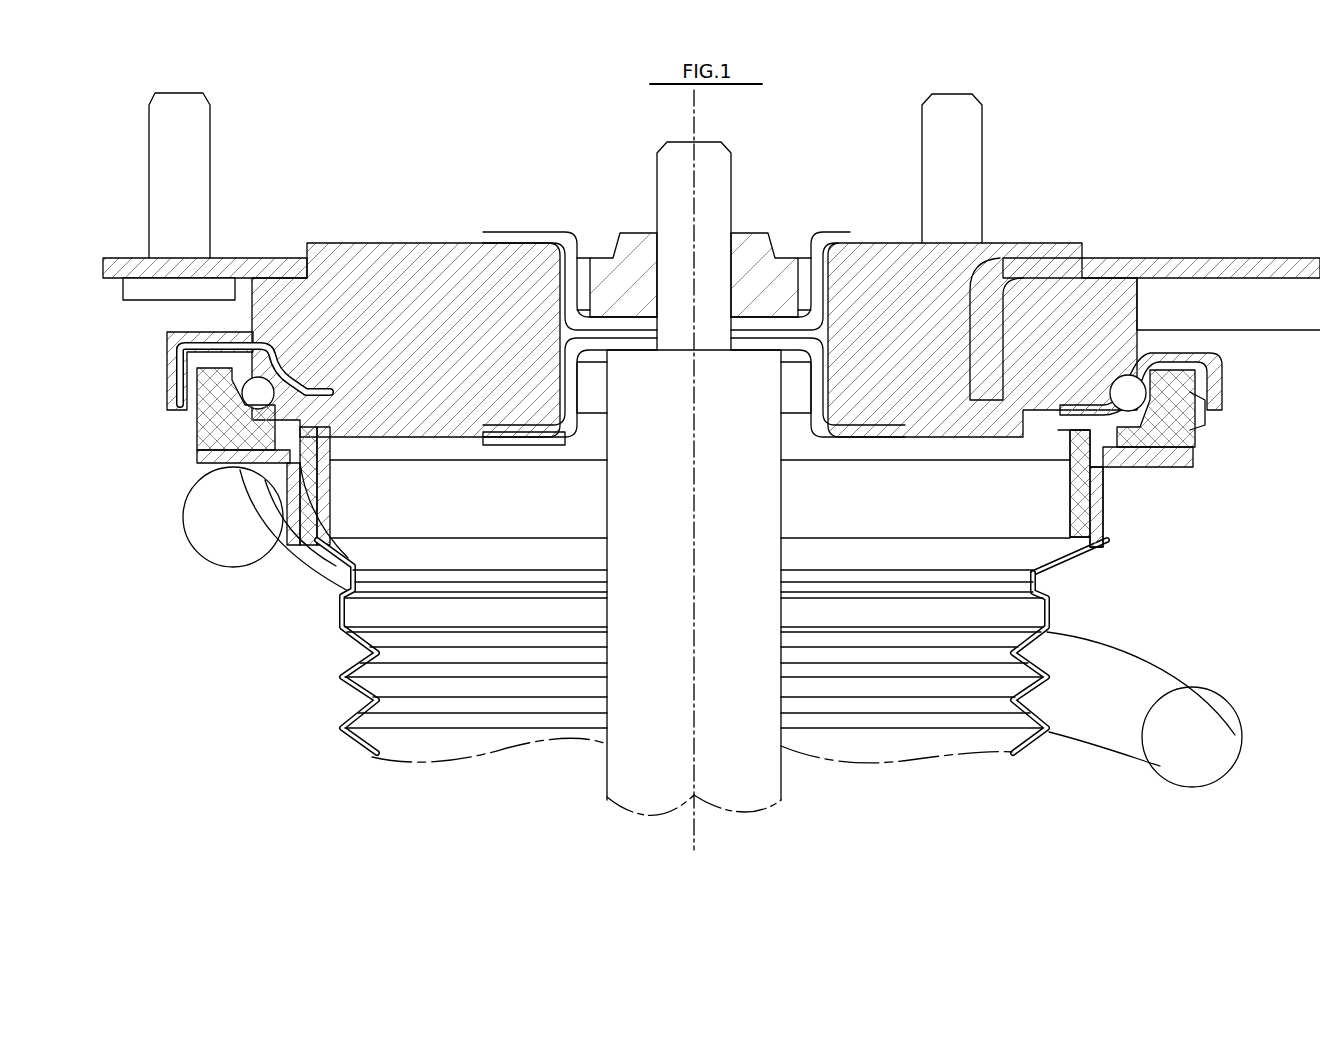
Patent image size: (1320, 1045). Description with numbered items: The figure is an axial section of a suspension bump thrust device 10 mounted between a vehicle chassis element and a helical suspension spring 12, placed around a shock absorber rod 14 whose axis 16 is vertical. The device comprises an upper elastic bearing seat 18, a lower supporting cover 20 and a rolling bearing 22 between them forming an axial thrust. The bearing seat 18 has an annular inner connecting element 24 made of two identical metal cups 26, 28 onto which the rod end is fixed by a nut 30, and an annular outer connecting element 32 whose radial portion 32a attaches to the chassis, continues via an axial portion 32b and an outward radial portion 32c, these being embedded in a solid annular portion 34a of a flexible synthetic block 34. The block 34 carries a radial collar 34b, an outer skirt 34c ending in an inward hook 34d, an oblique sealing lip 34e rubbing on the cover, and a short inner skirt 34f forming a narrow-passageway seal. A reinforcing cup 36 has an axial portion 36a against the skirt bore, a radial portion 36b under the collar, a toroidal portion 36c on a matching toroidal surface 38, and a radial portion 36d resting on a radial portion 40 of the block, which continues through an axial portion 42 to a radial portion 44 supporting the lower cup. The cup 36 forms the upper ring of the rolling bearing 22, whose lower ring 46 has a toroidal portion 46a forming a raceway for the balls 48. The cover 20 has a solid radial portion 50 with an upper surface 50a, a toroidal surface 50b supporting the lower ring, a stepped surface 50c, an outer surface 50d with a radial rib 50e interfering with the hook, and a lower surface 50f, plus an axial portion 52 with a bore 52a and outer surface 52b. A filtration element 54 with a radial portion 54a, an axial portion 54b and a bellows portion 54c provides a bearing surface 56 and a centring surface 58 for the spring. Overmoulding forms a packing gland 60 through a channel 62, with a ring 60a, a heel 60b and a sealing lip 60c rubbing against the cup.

The suspension bump thrust device 10 is at (1083, 152).
The helical suspension spring 12 is at (1190, 780).
The shock absorber rod 14 is at (657, 176).
The axis 16 is at (694, 838).
The upper elastic bearing seat 18 is at (432, 238).
The lower supporting cover 20 is at (1198, 444).
The rolling bearing 22 is at (1160, 352).
The annular inner connecting element 24 is at (513, 230).
The cup 26 is at (572, 243).
The cup 28 is at (526, 445).
The nut 30 is at (764, 243).
The annular outer connecting element 32 is at (1104, 255).
The radial portion 32a is at (1190, 258).
The axial portion 32b is at (998, 322).
The radial portion 32c is at (1016, 404).
The flexible synthetic block 34 is at (378, 242).
The solid annular portion 34a is at (466, 284).
The annular radial collar 34b is at (203, 338).
The outer annular skirt 34c is at (176, 390).
The hook 34d is at (192, 410).
The outer annular sealing lip 34e is at (212, 425).
The inner annular skirt 34f is at (322, 437).
The reinforcing cup 36 is at (198, 362).
The outer annular axial portion 36a is at (184, 398).
The annular radial portion 36b is at (216, 348).
The annular toroidal portion 36c is at (254, 345).
The annular radial portion 36d is at (300, 384).
The lower toroidal surface 38 is at (270, 362).
The annular radial portion 40 is at (338, 412).
The annular axial portion 42 is at (336, 432).
The annular radial portion 44 is at (406, 432).
The lower ring 46 is at (232, 418).
The annular toroidal portion 46a is at (238, 430).
The rolling elements 48 is at (258, 393).
The annular solid radial portion 50 is at (1182, 458).
The upper annular radial surface 50a is at (1165, 368).
The annular toroidal surface 50b is at (1166, 395).
The annular stepped surface 50c is at (1130, 412).
The axial outer surface 50d is at (1196, 412).
The annular radial rib 50e is at (1188, 380).
The annular lower radial surface 50f is at (1178, 468).
The annular axial portion 52 is at (1080, 512).
The axial bore 52a is at (1068, 484).
The axial outer surface 52b is at (1096, 520).
The filtration element 54 is at (262, 438).
The annular radial portion 54a is at (214, 468).
The annular axial portion 54b is at (288, 494).
The bellows portion 54c is at (1062, 553).
The annular radial bearing surface 56 is at (234, 408).
The annular axial surface 58 is at (292, 490).
The packing gland 60 is at (234, 456).
The annular ring 60a is at (290, 472).
The annular heel 60b is at (306, 492).
The annular sealing lip 60c is at (320, 500).
The annular axial channel 62 is at (300, 482).